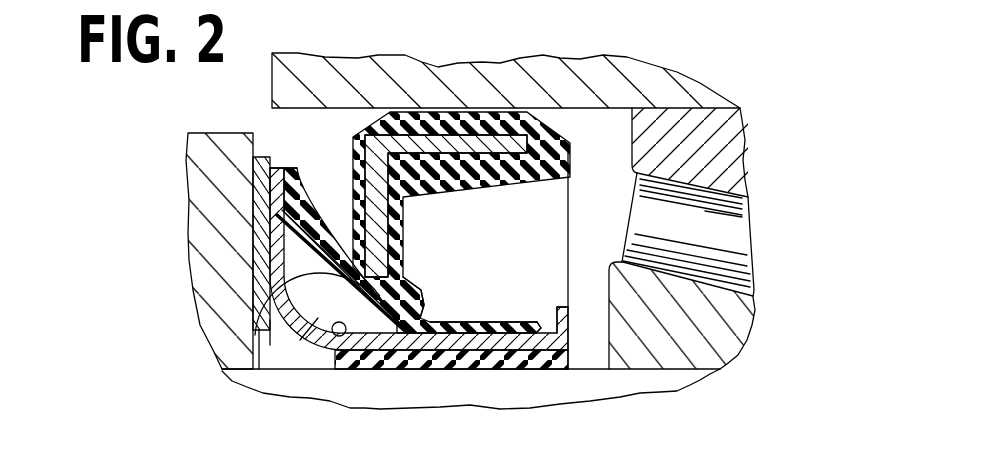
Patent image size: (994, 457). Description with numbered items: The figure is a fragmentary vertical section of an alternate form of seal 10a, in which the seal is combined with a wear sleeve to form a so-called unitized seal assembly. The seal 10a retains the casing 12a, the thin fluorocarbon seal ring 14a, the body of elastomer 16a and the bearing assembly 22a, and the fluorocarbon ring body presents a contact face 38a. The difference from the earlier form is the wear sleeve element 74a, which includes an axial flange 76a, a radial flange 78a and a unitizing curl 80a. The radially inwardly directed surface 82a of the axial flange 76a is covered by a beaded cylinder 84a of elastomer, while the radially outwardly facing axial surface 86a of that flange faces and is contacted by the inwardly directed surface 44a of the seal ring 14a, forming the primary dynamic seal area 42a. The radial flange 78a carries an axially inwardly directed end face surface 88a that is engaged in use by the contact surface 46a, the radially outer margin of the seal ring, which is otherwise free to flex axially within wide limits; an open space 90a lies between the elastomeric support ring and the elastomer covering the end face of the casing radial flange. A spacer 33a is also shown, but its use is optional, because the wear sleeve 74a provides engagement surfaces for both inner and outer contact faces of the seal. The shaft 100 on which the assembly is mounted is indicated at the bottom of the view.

The seal 10a is at (530, 241).
The casing 12a is at (458, 130).
The seal ring 14a is at (318, 310).
The body of elastomer 16a is at (418, 279).
The bearing assembly 22a is at (760, 236).
The spacer 33a is at (198, 273).
The contact face 38a is at (322, 302).
The primary dynamic seal area 42a is at (462, 316).
The inwardly directed surface 44a is at (518, 326).
The contact surface 46a is at (270, 190).
The wear sleeve element 74a is at (272, 332).
The axial flange 76a is at (426, 355).
The radial flange 78a is at (260, 230).
The unitizing curl 80a is at (567, 323).
The radially inwardly directed surface 82a is at (474, 340).
The beaded cylinder of elastomer 84a is at (381, 352).
The radially outwardly facing axial surface 86a is at (337, 336).
The axially inwardly directed end face surface 88a is at (273, 160).
The space 90a is at (346, 200).
The shaft 100 is at (528, 413).